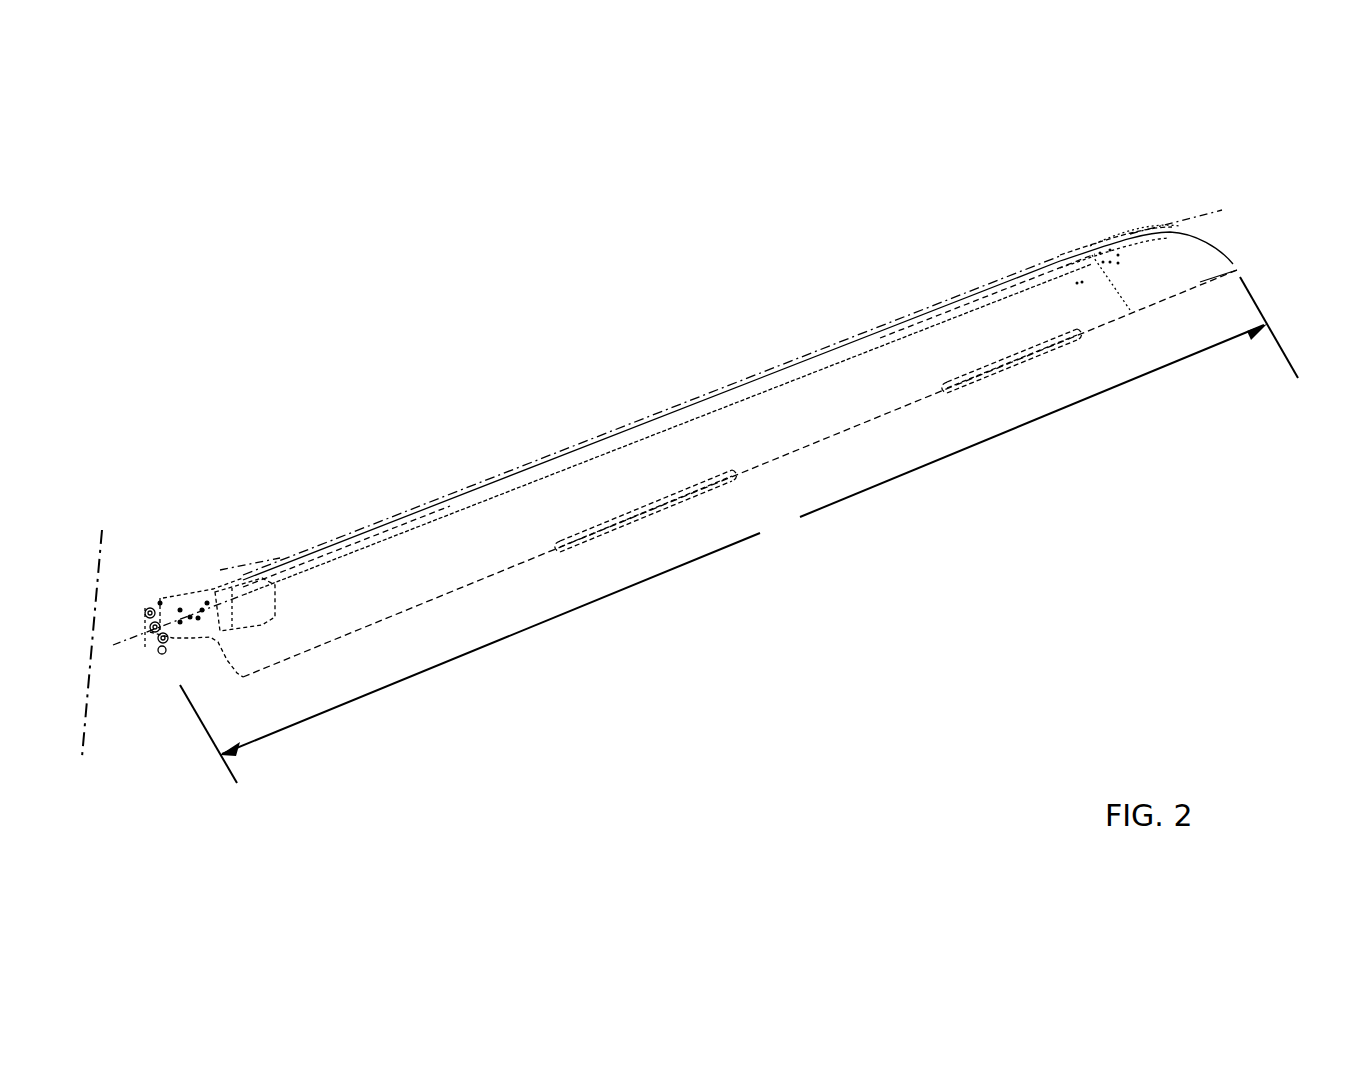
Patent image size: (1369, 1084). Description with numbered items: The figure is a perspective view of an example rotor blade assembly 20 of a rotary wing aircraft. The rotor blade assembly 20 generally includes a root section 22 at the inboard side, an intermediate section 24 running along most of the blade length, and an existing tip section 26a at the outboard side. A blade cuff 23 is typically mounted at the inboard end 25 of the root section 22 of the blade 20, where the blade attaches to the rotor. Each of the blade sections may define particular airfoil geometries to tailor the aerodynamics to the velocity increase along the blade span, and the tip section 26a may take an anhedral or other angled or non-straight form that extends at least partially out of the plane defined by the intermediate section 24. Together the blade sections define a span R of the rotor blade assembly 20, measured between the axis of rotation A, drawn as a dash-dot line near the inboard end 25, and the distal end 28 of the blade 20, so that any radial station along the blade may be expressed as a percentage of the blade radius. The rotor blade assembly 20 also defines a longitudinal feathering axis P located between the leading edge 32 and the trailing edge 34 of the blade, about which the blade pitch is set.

The rotor blade assembly 20 is at (450, 289).
The root section 22 is at (316, 524).
The blade cuff 23 is at (190, 606).
The intermediate section 24 is at (615, 412).
The inboard end 25 is at (158, 632).
The existing tip section 26a is at (1040, 252).
The distal end 28 is at (1233, 265).
The leading edge 32 is at (752, 376).
The trailing edge 34 is at (845, 430).
The axis of rotation A is at (105, 548).
The longitudinal feathering axis P is at (1197, 221).
The span R is at (739, 530).